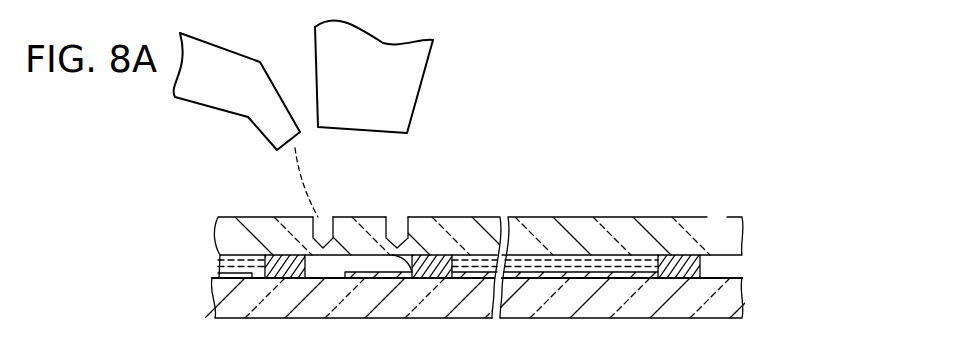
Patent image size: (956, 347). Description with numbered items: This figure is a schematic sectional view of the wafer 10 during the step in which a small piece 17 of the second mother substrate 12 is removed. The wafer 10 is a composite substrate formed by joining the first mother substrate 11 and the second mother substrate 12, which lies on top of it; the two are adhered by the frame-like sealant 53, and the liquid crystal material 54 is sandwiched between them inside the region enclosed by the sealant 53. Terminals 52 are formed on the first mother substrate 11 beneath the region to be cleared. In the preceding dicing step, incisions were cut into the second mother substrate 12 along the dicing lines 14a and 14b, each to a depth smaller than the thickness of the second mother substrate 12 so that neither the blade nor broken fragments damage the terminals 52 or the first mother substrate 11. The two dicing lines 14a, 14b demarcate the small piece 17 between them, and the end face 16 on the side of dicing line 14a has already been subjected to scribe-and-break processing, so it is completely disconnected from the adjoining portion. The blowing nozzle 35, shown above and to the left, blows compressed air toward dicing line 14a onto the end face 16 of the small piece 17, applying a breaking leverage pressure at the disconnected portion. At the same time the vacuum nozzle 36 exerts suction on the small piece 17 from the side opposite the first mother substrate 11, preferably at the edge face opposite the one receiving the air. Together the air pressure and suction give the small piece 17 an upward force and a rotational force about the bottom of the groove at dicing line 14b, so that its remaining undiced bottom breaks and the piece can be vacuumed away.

The wafer 10 is at (745, 180).
The first mother substrate 11 is at (733, 302).
The second mother substrate 12 is at (735, 232).
The dicing line 14a is at (323, 198).
The dicing line 14b is at (399, 195).
The end face 16 is at (331, 221).
The small piece 17 is at (365, 223).
The blowing nozzle 35 is at (223, 63).
The vacuum nozzle 36 is at (408, 85).
The terminals 52 is at (391, 270).
The sealant 53 is at (682, 262).
The liquid crystal material 54 is at (617, 260).